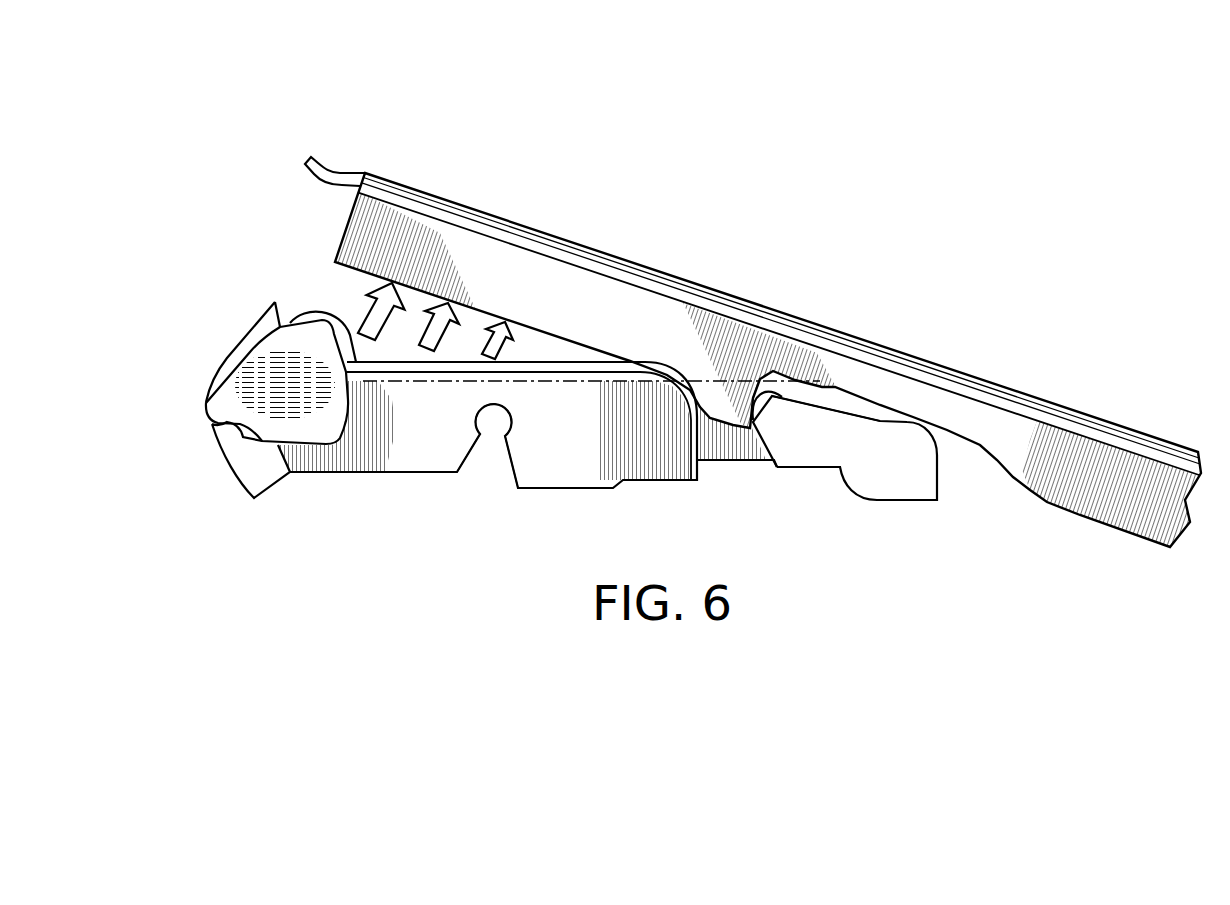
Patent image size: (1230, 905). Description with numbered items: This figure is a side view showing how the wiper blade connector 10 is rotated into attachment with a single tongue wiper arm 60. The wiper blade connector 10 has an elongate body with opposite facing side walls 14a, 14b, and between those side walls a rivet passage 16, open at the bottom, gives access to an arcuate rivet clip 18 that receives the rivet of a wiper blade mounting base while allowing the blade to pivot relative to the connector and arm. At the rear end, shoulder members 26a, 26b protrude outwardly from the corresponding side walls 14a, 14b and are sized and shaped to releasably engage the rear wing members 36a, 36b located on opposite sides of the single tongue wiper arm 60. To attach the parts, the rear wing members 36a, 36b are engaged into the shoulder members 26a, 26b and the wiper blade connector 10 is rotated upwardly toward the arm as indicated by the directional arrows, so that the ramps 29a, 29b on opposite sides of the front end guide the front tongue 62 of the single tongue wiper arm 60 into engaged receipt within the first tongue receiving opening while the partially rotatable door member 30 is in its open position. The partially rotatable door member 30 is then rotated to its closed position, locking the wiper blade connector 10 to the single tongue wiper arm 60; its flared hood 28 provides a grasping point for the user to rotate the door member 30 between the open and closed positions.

The wiper blade connector 10 is at (388, 480).
The side wall 14a is at (717, 473).
The side wall 14b is at (637, 440).
The rivet passage 16 is at (474, 482).
The arcuate rivet clip 18 is at (500, 421).
The shoulder member 26a is at (880, 483).
The shoulder member 26b is at (820, 450).
The flared hood 28 is at (257, 323).
The ramp 29a is at (206, 378).
The ramp 29b is at (230, 368).
The partially rotatable door member 30 is at (240, 457).
The rear wing member 36a is at (663, 352).
The rear wing member 36b is at (835, 380).
The single tongue wiper arm 60 is at (724, 286).
The front tongue 62 is at (340, 170).